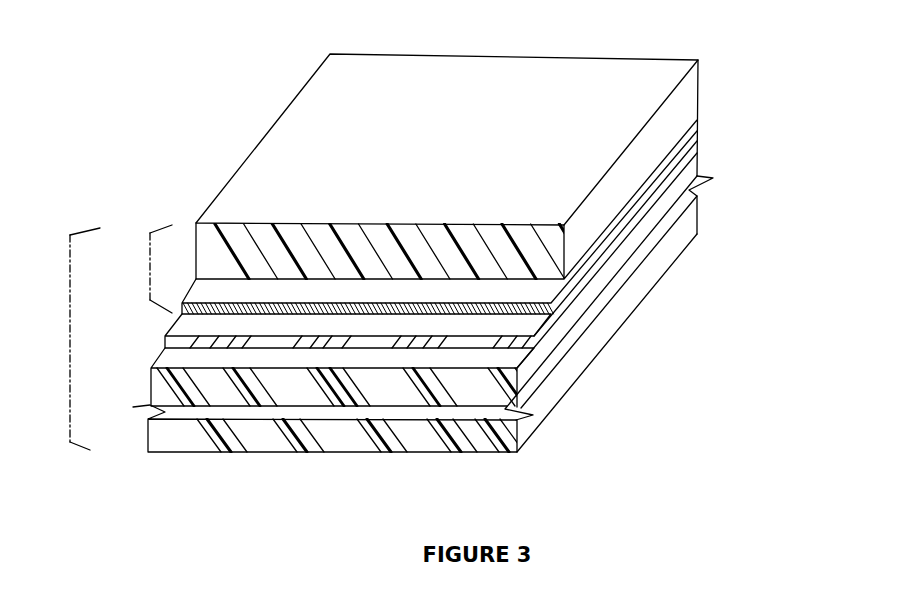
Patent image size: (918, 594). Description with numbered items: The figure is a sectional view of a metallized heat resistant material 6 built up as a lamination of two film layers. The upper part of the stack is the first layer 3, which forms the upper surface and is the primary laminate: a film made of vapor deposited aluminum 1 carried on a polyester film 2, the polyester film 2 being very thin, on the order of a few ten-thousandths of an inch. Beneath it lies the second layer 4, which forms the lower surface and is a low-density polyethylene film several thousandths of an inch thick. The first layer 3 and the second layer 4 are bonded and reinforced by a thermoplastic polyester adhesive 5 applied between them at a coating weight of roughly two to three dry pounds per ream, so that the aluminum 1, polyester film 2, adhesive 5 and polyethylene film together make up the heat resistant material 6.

The vapor deposited aluminum 1 is at (594, 262).
The polyester film 2 is at (646, 146).
The first layer 3 is at (144, 269).
The second layer 4 is at (574, 383).
The thermoplastic polyester adhesive 5 is at (558, 325).
The metallized heat resistant material 6 is at (60, 339).